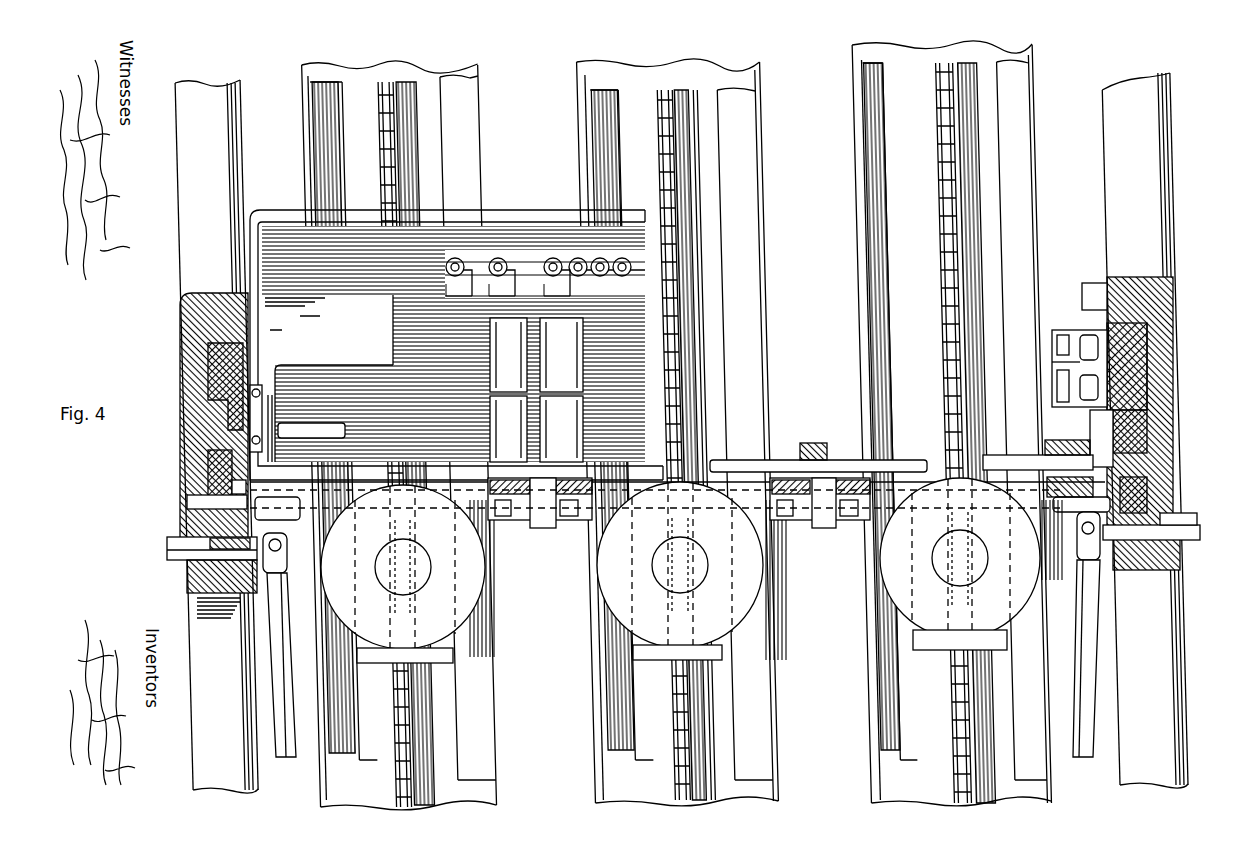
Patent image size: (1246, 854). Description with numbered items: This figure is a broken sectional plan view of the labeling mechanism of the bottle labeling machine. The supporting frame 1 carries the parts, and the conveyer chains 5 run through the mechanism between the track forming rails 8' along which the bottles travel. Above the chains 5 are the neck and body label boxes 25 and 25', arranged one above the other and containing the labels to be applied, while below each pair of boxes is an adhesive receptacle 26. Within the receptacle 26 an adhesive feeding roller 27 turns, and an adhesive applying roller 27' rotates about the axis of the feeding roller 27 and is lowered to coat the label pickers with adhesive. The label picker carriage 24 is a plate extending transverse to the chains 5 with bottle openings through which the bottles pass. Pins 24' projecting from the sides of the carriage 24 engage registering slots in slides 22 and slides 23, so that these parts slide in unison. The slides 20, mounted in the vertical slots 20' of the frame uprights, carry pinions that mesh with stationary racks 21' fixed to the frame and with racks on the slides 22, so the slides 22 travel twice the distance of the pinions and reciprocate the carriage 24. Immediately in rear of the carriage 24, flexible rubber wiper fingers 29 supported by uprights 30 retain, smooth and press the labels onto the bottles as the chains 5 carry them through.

The supporting frame 1 is at (176, 262).
The conveyer chains 5 is at (393, 122).
The track forming rails 8' is at (676, 425).
The adhesive receptacle 26 is at (520, 210).
The neck label box 25 is at (538, 344).
The body label box 25' is at (612, 429).
The adhesive feeding roller 27 is at (321, 400).
The adhesive applying roller 27' is at (311, 431).
The slides 23 is at (204, 474).
The horizontally extending pins 24' is at (667, 481).
The slides 22 is at (186, 523).
The label picker carriage 24 is at (593, 527).
The wiper fingers 29 is at (770, 466).
The uprights 30 is at (814, 443).
The stationary racks 21' is at (1077, 345).
The slides 20 is at (1158, 366).
The vertical slots 20' is at (1178, 366).